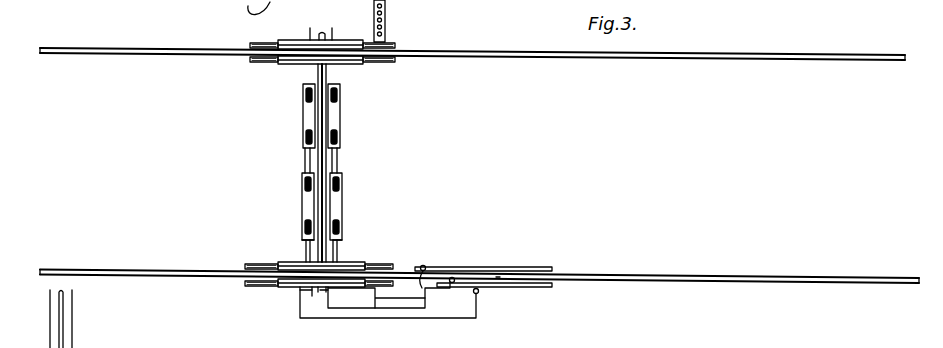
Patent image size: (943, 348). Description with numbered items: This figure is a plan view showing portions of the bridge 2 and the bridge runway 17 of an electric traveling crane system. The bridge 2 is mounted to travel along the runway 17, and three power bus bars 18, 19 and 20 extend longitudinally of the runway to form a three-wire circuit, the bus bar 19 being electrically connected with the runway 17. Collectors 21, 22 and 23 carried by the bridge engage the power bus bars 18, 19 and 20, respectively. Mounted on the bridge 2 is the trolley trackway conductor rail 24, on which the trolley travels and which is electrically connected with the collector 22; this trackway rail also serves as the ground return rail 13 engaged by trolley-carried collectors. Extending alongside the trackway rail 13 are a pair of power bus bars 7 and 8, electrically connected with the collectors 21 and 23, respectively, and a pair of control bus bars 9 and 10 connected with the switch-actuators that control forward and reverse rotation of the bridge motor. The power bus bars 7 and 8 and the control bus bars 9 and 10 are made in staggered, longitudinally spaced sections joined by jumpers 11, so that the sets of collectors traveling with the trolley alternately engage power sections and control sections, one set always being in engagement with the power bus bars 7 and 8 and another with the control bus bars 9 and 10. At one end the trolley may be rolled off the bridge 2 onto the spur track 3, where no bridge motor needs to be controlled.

The bridge 2 is at (323, 210).
The spur track 3 is at (76, 320).
The power bus bar 7 is at (304, 241).
The power bus bar 8 is at (334, 259).
The control bus bar 9 is at (310, 120).
The control bus bar 10 is at (341, 125).
The jumpers 11 is at (313, 71).
The ground return rail 13 is at (326, 250).
The bridge runway 17 is at (130, 54).
The power bus bar 18 is at (523, 289).
The power bus bar 19 is at (499, 277).
The power bus bar 20 is at (447, 267).
The collector 21 is at (478, 294).
The collector 22 is at (456, 278).
The collector 23 is at (423, 265).
The trolley trackway conductor rail 24 is at (324, 112).